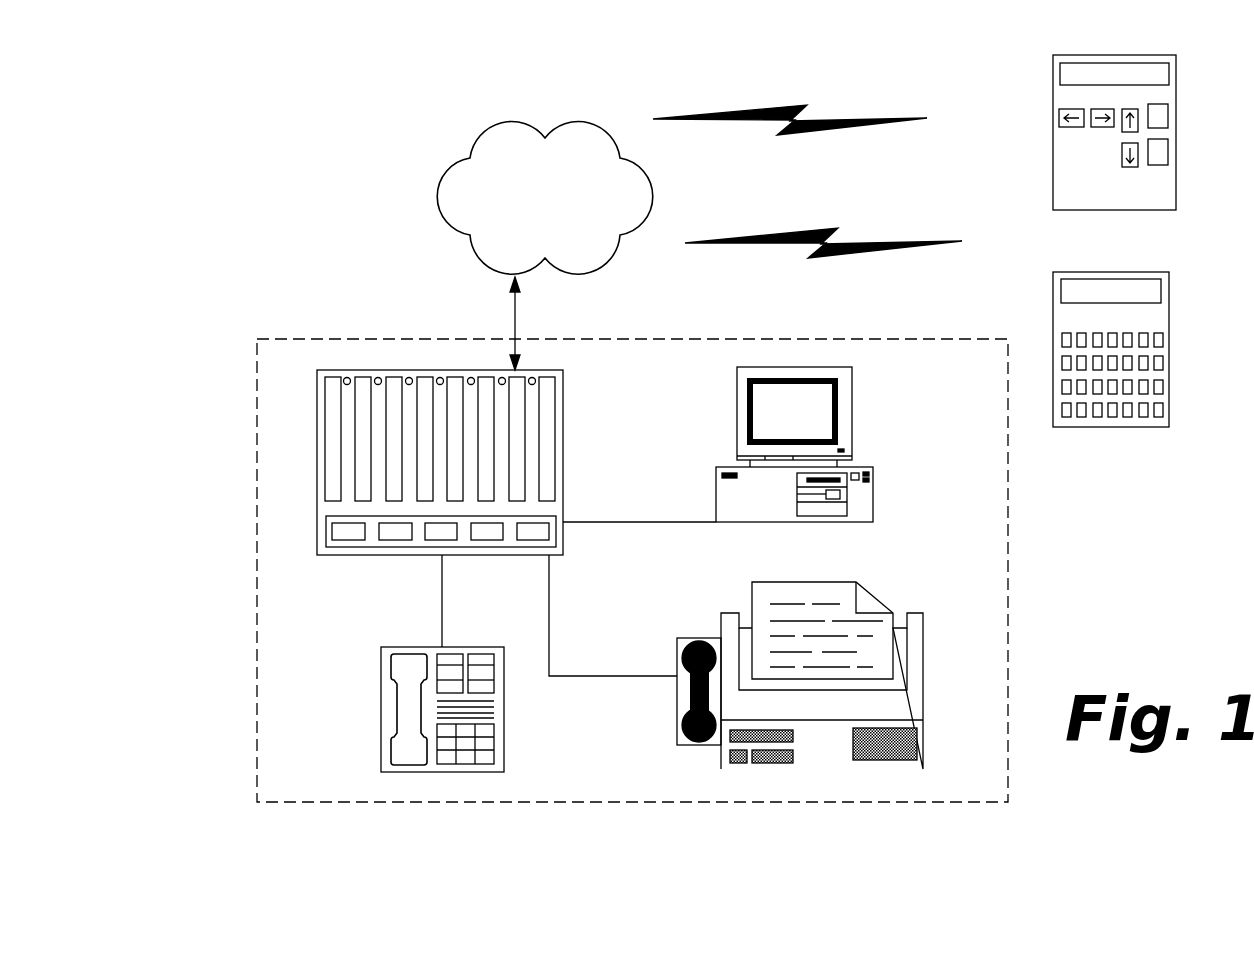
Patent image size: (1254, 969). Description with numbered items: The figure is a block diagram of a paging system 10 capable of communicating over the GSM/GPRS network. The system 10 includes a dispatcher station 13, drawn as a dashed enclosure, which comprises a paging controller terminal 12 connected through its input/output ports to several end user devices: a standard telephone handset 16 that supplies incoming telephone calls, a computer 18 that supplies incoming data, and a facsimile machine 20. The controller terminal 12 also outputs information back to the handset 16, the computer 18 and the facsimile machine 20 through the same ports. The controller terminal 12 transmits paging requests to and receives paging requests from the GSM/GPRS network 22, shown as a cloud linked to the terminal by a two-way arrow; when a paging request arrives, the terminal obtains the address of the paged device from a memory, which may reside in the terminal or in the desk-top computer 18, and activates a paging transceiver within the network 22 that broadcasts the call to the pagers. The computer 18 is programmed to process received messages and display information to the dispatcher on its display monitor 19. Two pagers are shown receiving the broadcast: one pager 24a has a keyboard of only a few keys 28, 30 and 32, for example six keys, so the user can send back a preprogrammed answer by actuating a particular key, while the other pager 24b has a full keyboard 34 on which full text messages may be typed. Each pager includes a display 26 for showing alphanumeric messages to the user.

The paging system 10 is at (237, 201).
The paging controller terminal 12 is at (378, 370).
The dispatcher station 13 is at (257, 407).
The standard telephone handset 16 is at (381, 697).
The computer 18 is at (843, 444).
The display monitor 19 is at (823, 413).
The facsimile machine 20 is at (923, 652).
The GSM/GPRS network 22 is at (512, 118).
The pager 24a is at (1086, 125).
The pager 24b is at (1088, 344).
The display 26 is at (1167, 60).
The key 28 is at (1168, 143).
The keys 30 is at (1123, 133).
The key 32 is at (1168, 105).
The full keyboard 34 is at (1157, 333).